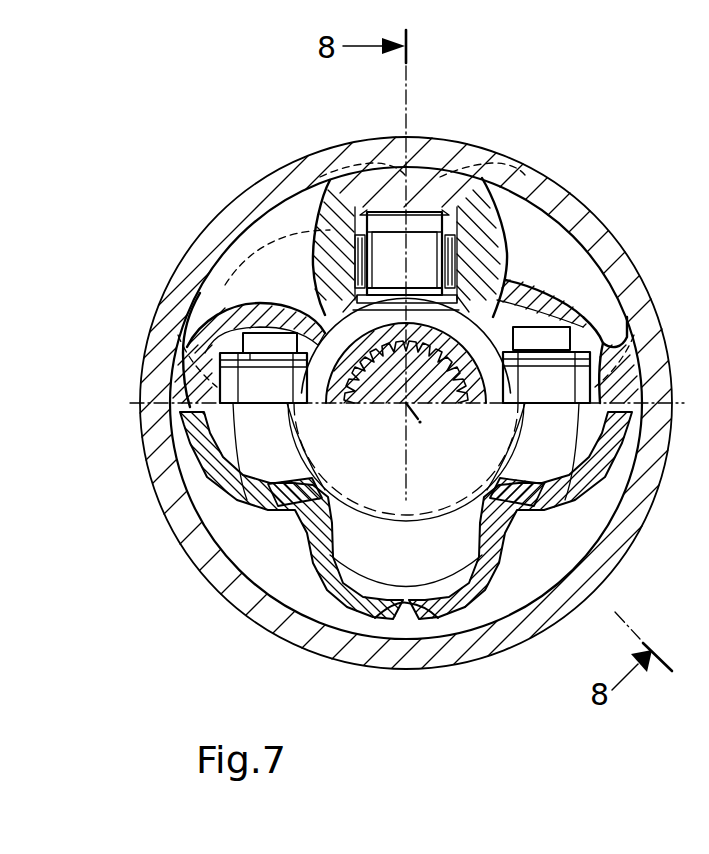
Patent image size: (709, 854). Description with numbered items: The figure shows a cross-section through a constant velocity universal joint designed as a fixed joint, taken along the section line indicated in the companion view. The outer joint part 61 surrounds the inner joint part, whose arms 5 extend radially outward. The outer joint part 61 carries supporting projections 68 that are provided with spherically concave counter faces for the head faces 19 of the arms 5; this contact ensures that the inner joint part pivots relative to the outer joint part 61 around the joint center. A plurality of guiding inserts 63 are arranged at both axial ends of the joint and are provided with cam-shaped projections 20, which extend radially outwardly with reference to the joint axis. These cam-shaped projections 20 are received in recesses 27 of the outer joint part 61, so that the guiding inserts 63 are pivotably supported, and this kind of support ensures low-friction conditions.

The arms 5 is at (478, 268).
The head faces 19 is at (384, 208).
The cam-shaped projections 20 is at (390, 627).
The recesses 27 is at (420, 635).
The outer joint part 61 is at (297, 178).
The guiding inserts 63 is at (508, 245).
The supporting projections 68 is at (428, 272).